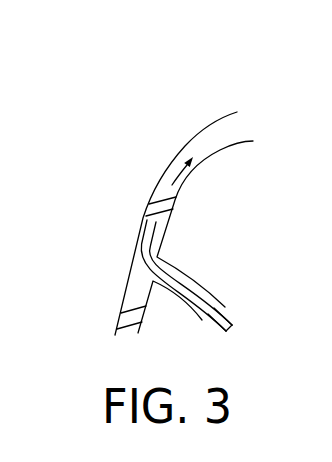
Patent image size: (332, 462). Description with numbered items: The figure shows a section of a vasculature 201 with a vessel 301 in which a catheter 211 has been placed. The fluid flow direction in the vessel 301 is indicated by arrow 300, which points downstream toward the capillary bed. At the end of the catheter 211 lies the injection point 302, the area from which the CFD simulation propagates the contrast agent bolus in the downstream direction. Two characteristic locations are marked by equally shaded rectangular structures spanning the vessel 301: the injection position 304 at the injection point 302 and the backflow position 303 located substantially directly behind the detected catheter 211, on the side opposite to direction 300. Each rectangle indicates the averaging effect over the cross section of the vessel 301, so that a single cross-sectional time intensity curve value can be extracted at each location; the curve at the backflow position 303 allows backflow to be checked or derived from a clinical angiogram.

The vasculature 201 is at (193, 100).
The catheter 211 is at (229, 318).
The fluid flow direction arrow 300 is at (190, 173).
The vessel 301 is at (166, 164).
The injection point 302 is at (141, 223).
The backflow position 303 is at (125, 322).
The injection position 304 is at (151, 205).